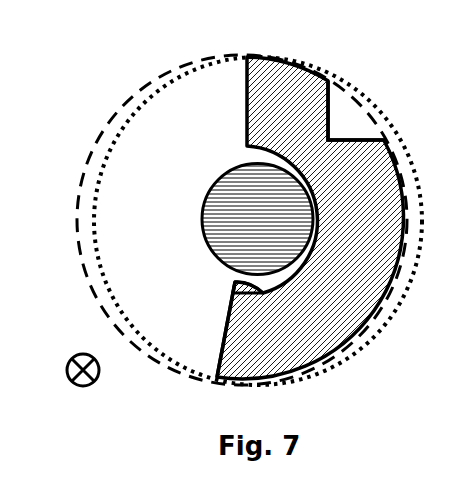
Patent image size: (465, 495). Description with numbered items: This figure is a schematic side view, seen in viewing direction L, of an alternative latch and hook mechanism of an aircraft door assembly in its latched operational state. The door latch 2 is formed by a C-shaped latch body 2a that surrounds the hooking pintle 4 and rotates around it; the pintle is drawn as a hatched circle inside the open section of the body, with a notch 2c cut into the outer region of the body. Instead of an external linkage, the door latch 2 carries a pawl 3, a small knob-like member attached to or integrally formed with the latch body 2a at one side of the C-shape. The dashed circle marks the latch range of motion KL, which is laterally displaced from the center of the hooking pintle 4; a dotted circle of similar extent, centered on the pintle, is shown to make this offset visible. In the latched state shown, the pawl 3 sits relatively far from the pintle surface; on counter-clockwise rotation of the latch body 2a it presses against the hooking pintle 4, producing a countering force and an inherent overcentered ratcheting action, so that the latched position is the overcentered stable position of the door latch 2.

The door latch 2 is at (385, 338).
The latch body 2a is at (230, 352).
The notch of body 2c is at (358, 112).
The pawl 3 is at (235, 290).
The hooking pintle 4 is at (203, 233).
The latch range of motion KL is at (125, 105).
The viewing direction L is at (62, 356).